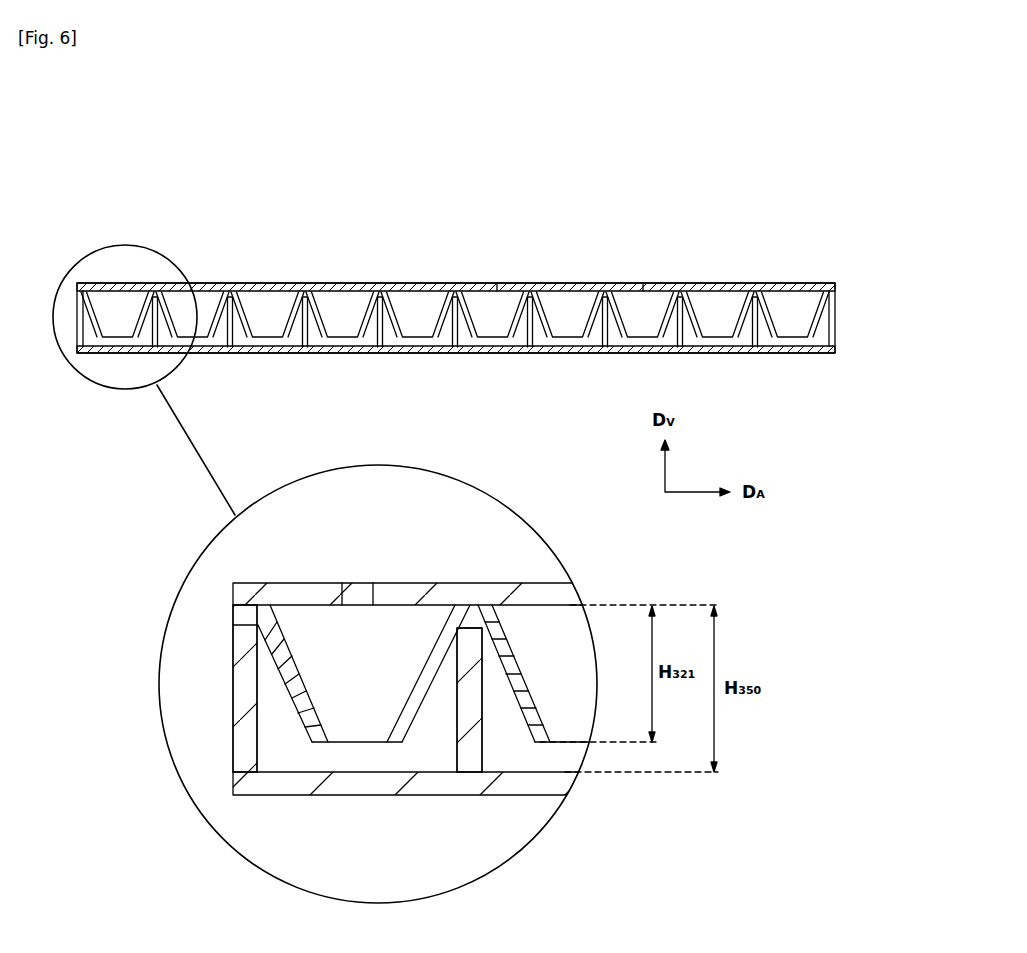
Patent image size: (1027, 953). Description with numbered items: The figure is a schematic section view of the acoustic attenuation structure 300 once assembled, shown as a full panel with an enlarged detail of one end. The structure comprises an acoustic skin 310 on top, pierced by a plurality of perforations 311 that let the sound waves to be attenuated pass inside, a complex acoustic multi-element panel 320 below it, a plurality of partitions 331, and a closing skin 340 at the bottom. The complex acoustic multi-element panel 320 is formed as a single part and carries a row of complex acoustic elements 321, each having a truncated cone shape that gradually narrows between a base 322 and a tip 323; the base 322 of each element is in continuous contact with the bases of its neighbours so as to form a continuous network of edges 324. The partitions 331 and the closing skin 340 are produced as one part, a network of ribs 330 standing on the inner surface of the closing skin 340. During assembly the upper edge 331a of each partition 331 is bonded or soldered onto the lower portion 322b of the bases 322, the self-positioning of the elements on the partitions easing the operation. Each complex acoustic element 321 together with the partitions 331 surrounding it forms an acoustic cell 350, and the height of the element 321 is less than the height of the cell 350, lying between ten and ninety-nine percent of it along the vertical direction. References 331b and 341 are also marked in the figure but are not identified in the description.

The acoustic attenuation structure 300 is at (697, 156).
The acoustic skin 310 is at (556, 282).
The perforations 311 is at (643, 283).
The complex acoustic multi-element panel 320 is at (96, 300).
The complex acoustic element 321 is at (253, 300).
The base 322 is at (267, 583).
The network of edges 324 is at (278, 593).
The lower portion of the base 322b is at (445, 608).
The tip 323 is at (328, 738).
The network of ribs 330 is at (838, 313).
The partitions 331 is at (303, 345).
The upper edge of the partitions 331a is at (458, 626).
The lower portion of vertical wall 331b is at (242, 768).
The closing skin 340 is at (742, 356).
The lower hollow space 341 is at (405, 350).
The acoustic cell 350 is at (350, 300).